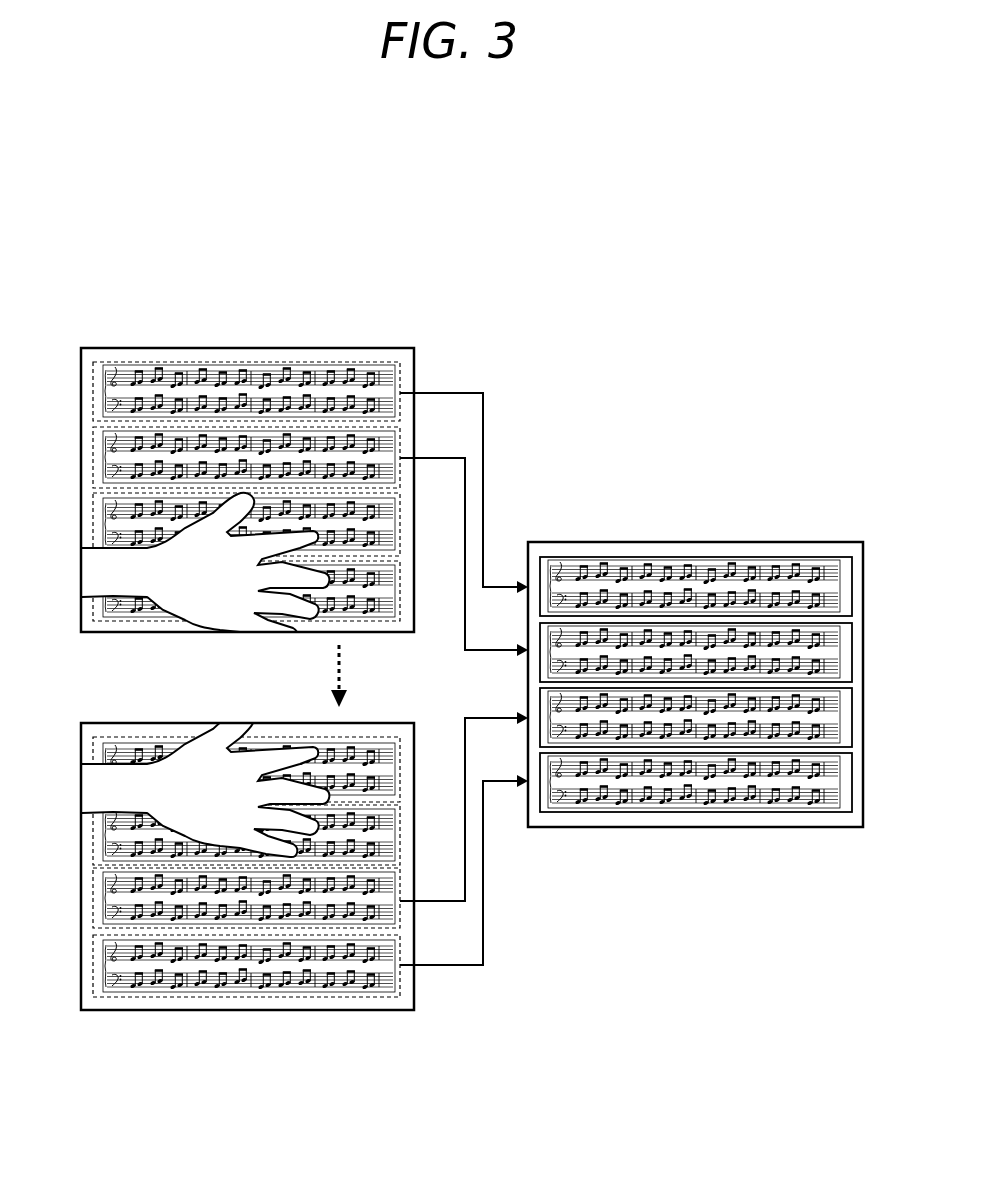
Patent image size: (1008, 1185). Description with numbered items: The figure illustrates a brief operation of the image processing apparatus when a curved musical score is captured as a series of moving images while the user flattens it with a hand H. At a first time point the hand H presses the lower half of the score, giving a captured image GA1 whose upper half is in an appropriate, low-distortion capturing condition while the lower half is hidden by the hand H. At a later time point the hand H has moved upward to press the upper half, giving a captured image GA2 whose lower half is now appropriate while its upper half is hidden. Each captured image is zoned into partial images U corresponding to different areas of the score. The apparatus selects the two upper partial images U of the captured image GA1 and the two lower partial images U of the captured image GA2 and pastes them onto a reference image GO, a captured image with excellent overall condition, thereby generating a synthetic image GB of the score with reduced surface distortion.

The partial image U is at (898, 781).
The hand H is at (96, 784).
The captured image at time point t1 GA1 is at (400, 348).
The captured image at time point t2 GA2 is at (400, 723).
The reference image GO is at (720, 541).
The synthetic image GB is at (808, 518).